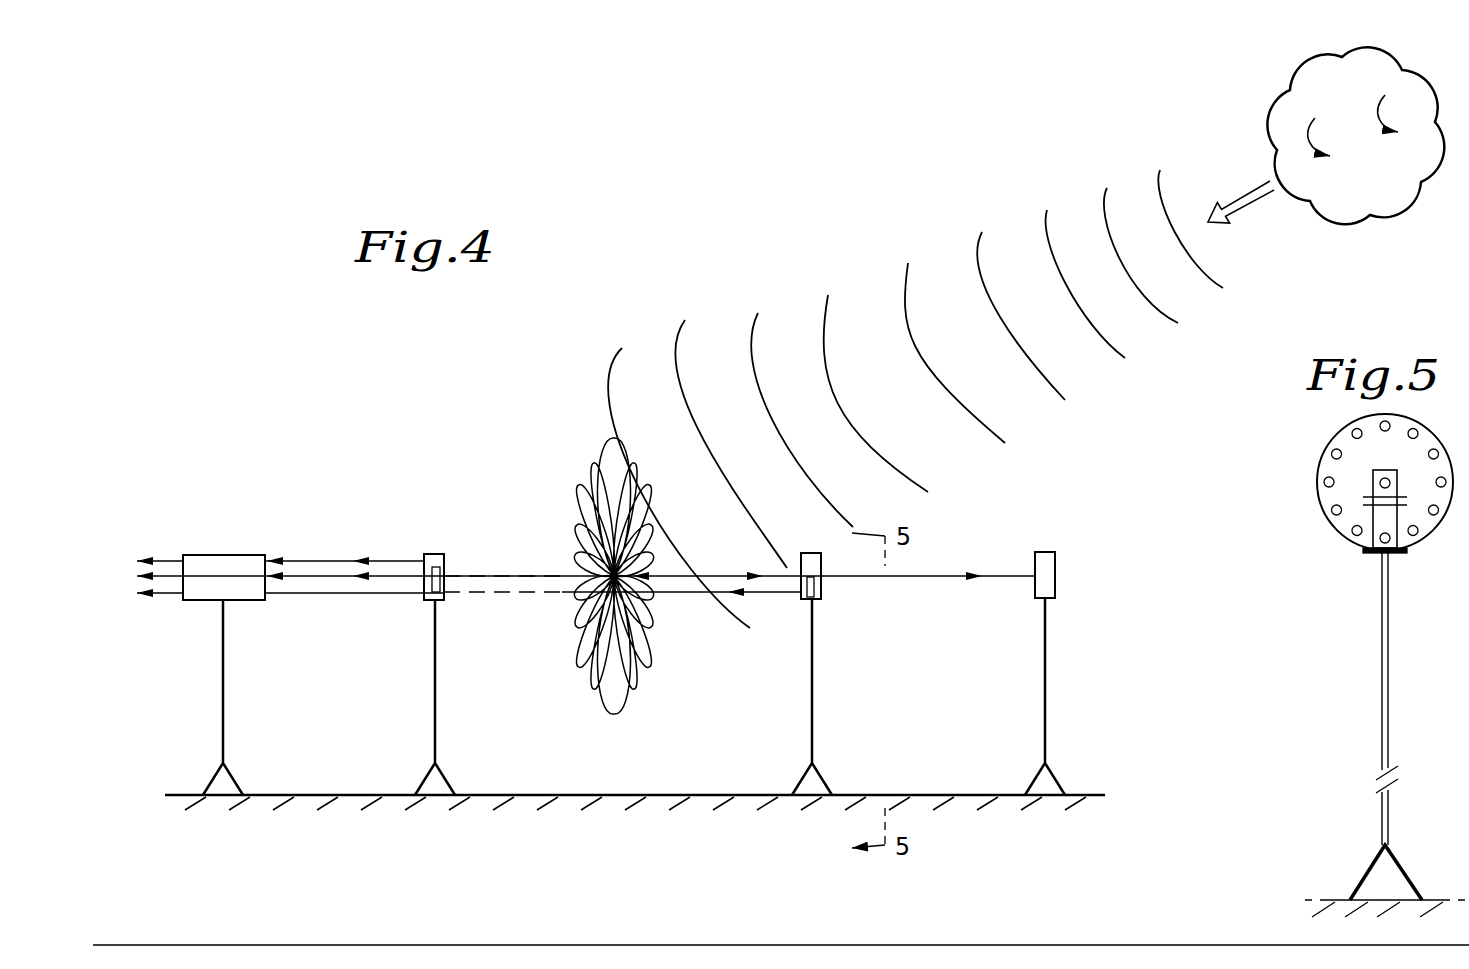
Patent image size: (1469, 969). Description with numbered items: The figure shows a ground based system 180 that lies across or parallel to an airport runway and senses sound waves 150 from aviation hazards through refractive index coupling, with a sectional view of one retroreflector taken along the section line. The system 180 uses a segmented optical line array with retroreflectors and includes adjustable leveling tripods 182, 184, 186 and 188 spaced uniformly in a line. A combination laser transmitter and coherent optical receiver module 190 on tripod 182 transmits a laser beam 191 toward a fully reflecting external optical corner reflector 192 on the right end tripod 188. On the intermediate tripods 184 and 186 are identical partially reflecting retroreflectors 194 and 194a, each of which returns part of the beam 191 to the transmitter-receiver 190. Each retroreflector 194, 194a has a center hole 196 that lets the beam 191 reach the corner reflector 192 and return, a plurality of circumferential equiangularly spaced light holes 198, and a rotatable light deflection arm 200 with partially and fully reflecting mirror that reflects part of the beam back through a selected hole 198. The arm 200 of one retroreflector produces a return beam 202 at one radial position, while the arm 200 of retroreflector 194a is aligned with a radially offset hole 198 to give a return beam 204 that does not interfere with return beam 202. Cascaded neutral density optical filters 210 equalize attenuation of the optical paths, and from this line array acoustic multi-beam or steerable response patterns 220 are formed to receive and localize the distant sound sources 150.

In FIG. 4, the sound waves 150 is at (1048, 212).
In FIG. 4, the ground based system 180 is at (460, 447).
In FIG. 4, the adjustable leveling tripod 182 is at (223, 688).
In FIG. 4, the adjustable leveling tripod 184 is at (435, 690).
In FIG. 4, the adjustable leveling tripod 186 is at (812, 668).
In FIG. 5, the adjustable leveling tripod 186 is at (1382, 613).
In FIG. 4, the adjustable leveling tripod 188 is at (1045, 668).
In FIG. 4, the combination laser transmitter and coherent optical receiver module 190 is at (232, 555).
In FIG. 4, the laser beam 191 is at (560, 576).
In FIG. 4, the fully reflecting external optical corner reflector 192 is at (1050, 562).
In FIG. 4, the partially reflecting retroreflector 194 is at (453, 539).
In FIG. 5, the partially reflecting retroreflector 194 is at (1405, 423).
In FIG. 4, the partially reflecting retroreflector 194a is at (821, 592).
In FIG. 5, the center hole 196 is at (1374, 475).
In FIG. 5, the light holes 198 is at (1336, 449).
In FIG. 5, the rotatable light deflection arm 200 is at (1373, 515).
In FIG. 4, the return beam 202 is at (327, 539).
In FIG. 4, the return beam 204 is at (307, 594).
In FIG. 5, the cascaded neutral density optical filters 210 is at (1365, 500).
In FIG. 4, the beam steerable response patterns 220 is at (578, 658).